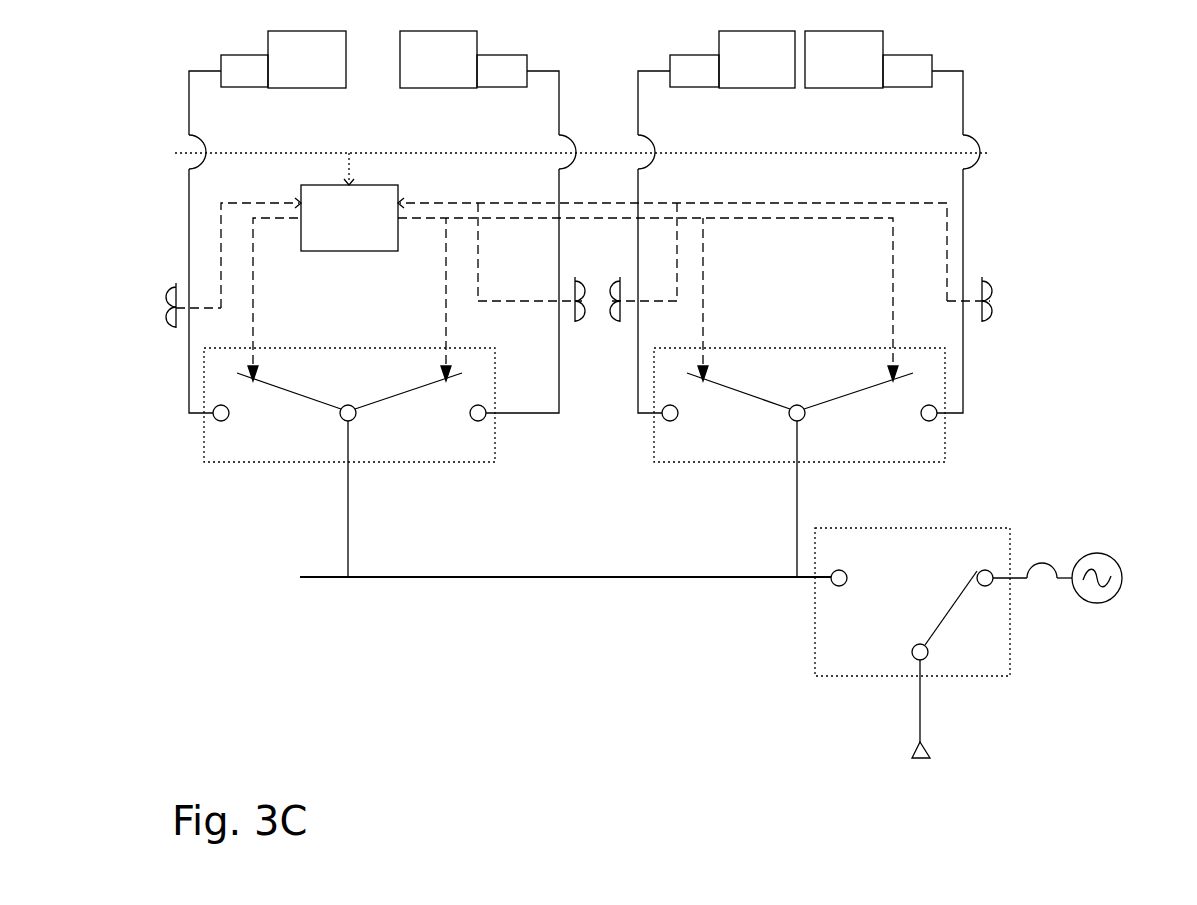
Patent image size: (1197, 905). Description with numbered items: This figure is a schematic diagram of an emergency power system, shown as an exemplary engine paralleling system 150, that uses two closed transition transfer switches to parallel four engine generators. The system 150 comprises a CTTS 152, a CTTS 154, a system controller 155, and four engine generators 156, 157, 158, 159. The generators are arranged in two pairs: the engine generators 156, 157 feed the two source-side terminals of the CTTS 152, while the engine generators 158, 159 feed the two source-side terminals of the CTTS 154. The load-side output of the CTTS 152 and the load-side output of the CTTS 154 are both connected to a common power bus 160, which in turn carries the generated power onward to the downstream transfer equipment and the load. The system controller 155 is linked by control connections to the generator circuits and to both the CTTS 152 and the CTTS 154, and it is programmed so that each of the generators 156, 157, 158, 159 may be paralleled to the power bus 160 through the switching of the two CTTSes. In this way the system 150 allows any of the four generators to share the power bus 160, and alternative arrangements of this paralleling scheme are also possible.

The engine paralleling system 150 is at (1043, 85).
The CTTS 152 is at (349, 462).
The CTTS 154 is at (799, 462).
The system controller 155 is at (579, 267).
The engine generator 156 is at (267, 222).
The engine generator 157 is at (479, 222).
The engine generator 158 is at (716, 222).
The engine generator 159 is at (884, 222).
The power bus 160 is at (530, 577).